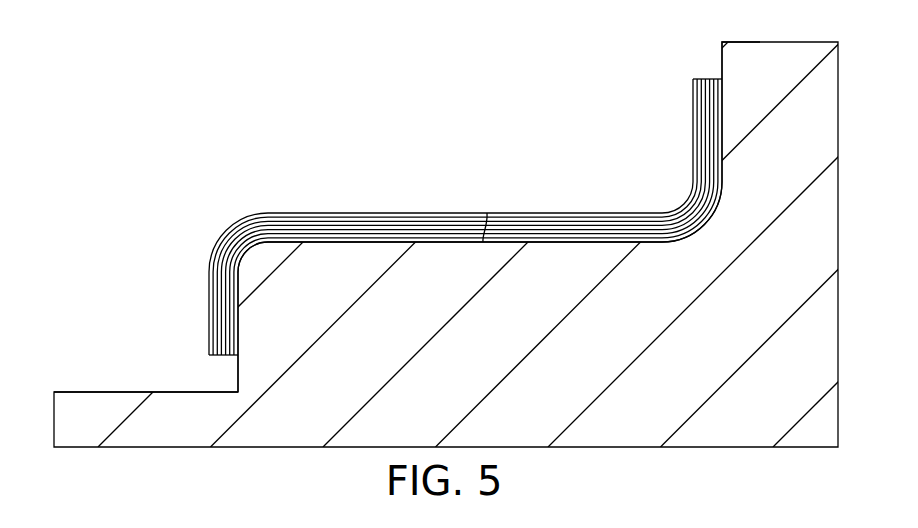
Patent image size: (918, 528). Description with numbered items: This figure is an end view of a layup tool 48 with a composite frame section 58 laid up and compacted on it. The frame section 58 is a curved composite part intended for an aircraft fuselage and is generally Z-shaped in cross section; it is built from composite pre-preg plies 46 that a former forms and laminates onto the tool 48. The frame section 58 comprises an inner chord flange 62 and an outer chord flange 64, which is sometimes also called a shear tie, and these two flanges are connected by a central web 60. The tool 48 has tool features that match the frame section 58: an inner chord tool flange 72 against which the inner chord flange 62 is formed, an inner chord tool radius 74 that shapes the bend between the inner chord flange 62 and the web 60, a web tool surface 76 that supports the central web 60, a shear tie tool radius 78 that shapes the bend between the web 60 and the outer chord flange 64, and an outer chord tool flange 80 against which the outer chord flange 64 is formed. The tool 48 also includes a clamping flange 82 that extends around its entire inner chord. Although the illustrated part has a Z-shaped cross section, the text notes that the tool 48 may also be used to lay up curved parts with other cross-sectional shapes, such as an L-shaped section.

The composite pre-preg plies 46 is at (388, 220).
The tool 48 is at (511, 344).
The frame section 58 is at (464, 217).
The central web 60 is at (452, 213).
The inner chord flange 62 is at (209, 303).
The outer chord flange 64 is at (693, 130).
The inner chord tool flange 72 is at (238, 372).
The inner chord tool radius 74 is at (249, 252).
The web tool surface 76 is at (487, 213).
The shear tie tool radius 78 is at (708, 219).
The outer chord tool flange 80 is at (721, 63).
The clamping flange 82 is at (103, 392).